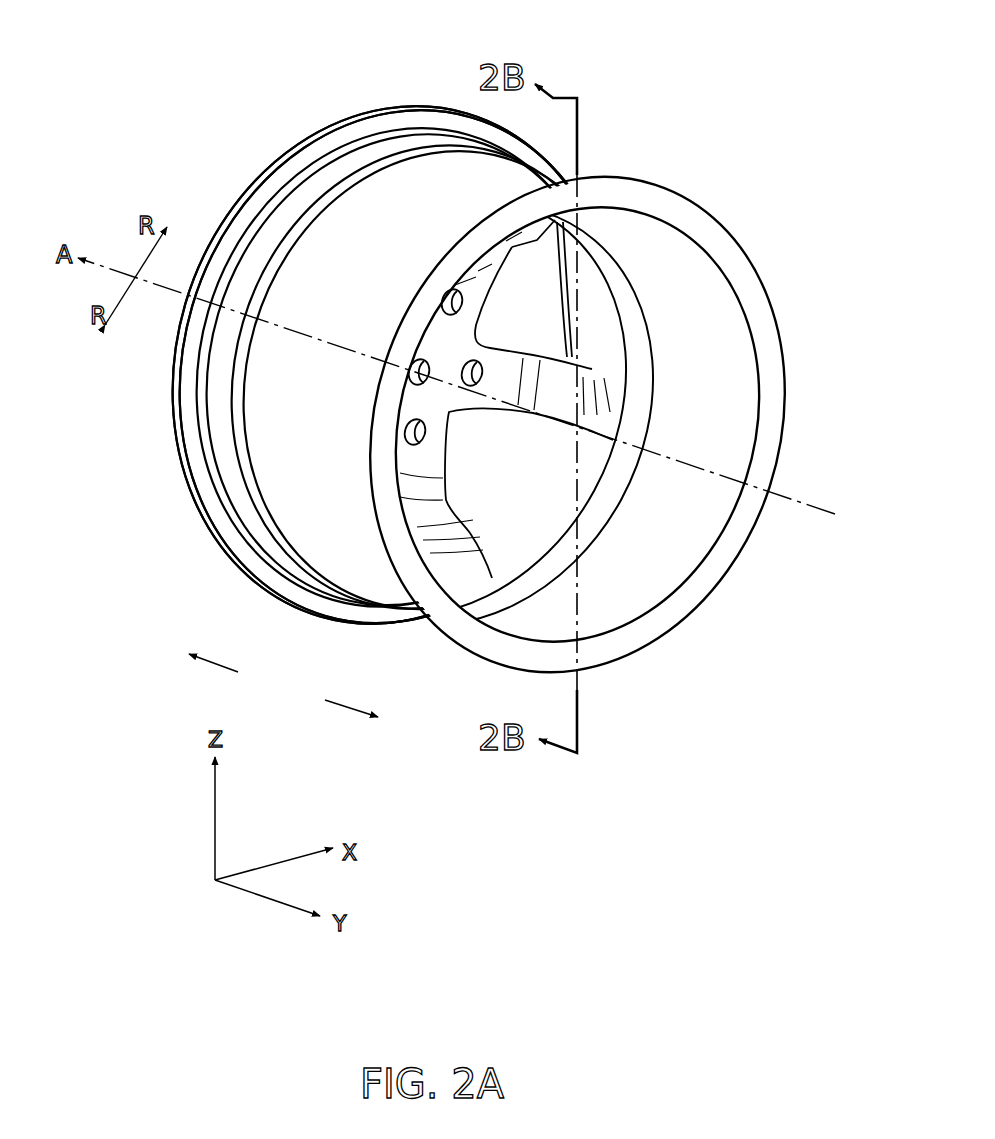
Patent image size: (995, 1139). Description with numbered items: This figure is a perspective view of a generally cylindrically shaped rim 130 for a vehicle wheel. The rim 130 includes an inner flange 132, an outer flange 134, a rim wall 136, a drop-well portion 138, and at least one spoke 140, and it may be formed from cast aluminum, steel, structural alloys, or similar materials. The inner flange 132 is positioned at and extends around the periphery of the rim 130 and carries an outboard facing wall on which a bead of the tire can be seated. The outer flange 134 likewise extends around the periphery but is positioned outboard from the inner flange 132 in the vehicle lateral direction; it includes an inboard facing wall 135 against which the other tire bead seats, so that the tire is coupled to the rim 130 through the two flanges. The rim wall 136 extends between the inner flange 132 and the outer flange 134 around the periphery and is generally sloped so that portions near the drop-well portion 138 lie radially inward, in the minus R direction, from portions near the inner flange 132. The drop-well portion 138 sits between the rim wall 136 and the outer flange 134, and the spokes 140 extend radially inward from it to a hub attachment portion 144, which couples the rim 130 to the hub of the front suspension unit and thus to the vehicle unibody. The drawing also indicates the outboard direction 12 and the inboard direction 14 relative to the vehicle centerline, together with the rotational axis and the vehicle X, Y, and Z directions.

The outboard direction 12 is at (220, 665).
The inboard direction 14 is at (350, 708).
The rim 130 is at (297, 128).
The inner flange 132 is at (728, 224).
The outer flange 134 is at (357, 107).
The inboard facing wall 135 is at (422, 110).
The rim wall 136 is at (302, 262).
The drop-well portion 138 is at (213, 416).
The spoke 140 is at (567, 380).
The hub attachment portion 144 is at (431, 396).